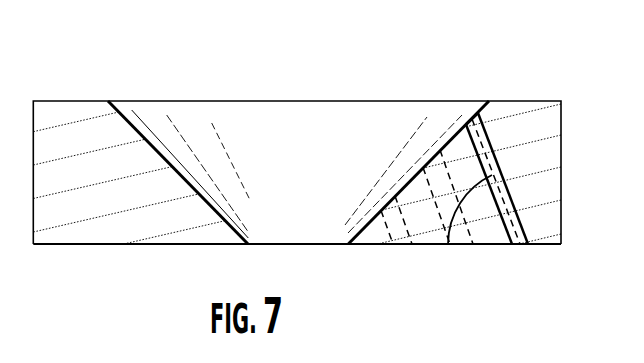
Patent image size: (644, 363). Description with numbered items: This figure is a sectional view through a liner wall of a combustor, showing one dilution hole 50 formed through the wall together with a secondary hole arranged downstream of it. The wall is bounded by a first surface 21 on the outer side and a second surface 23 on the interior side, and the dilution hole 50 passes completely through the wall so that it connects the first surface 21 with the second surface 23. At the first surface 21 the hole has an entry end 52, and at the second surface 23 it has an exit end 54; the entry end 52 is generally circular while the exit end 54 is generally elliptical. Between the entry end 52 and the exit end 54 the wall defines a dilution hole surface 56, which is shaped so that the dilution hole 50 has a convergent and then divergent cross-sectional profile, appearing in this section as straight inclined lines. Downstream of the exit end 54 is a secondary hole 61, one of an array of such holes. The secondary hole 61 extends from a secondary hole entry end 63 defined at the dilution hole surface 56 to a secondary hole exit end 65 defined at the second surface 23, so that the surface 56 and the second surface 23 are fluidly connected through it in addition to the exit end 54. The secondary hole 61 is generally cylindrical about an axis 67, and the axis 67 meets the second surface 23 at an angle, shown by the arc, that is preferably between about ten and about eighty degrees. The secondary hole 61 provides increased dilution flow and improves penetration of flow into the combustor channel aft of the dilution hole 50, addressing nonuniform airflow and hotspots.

The dilution hole 50 is at (131, 78).
The first surface 21 is at (532, 101).
The second surface 23 is at (65, 245).
The entry end 52 is at (173, 101).
The exit end 54 is at (330, 245).
The dilution hole surface 56 is at (275, 148).
The secondary hole 61 is at (427, 163).
The secondary hole entry end 63 is at (466, 125).
The secondary hole exit end 65 is at (522, 245).
The axis 67 is at (503, 196).